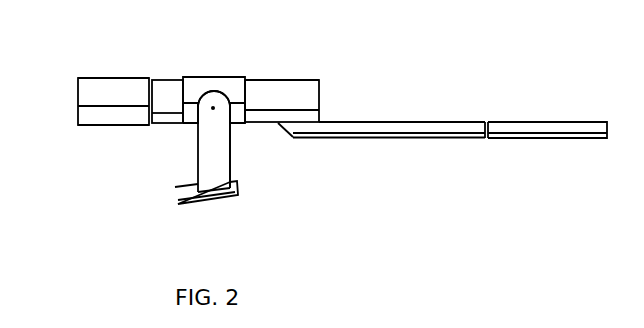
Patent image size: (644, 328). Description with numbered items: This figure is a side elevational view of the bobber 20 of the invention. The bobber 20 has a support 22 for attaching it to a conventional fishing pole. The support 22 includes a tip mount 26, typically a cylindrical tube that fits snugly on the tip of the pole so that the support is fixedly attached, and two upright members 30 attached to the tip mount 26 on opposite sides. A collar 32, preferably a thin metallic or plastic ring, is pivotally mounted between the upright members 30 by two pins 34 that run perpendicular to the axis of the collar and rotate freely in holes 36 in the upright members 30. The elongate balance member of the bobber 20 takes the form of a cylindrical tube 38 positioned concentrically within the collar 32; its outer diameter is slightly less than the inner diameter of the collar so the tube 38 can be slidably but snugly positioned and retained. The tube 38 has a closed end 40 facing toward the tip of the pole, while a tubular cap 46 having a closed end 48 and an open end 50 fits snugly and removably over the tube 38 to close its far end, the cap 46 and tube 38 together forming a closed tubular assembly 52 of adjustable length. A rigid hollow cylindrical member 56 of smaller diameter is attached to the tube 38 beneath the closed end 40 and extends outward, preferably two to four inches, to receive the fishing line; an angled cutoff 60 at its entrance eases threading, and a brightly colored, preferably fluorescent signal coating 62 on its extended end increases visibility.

The bobber 20 is at (350, 69).
The support 22 is at (232, 160).
The tip mount 26 is at (197, 204).
The upright members 30 is at (198, 160).
The collar 32 is at (212, 78).
The pins 34 is at (213, 108).
The holes 36 is at (214, 107).
The tube 38 is at (303, 78).
The closed end 40 is at (320, 100).
The cap 46 is at (97, 78).
The closed end 48 is at (78, 109).
The open end 50 is at (153, 95).
The closed tubular assembly 52 is at (138, 125).
The hollow cylindrical member 56 is at (433, 121).
The angled cutoff 60 is at (286, 135).
The signal coating 62 is at (528, 119).